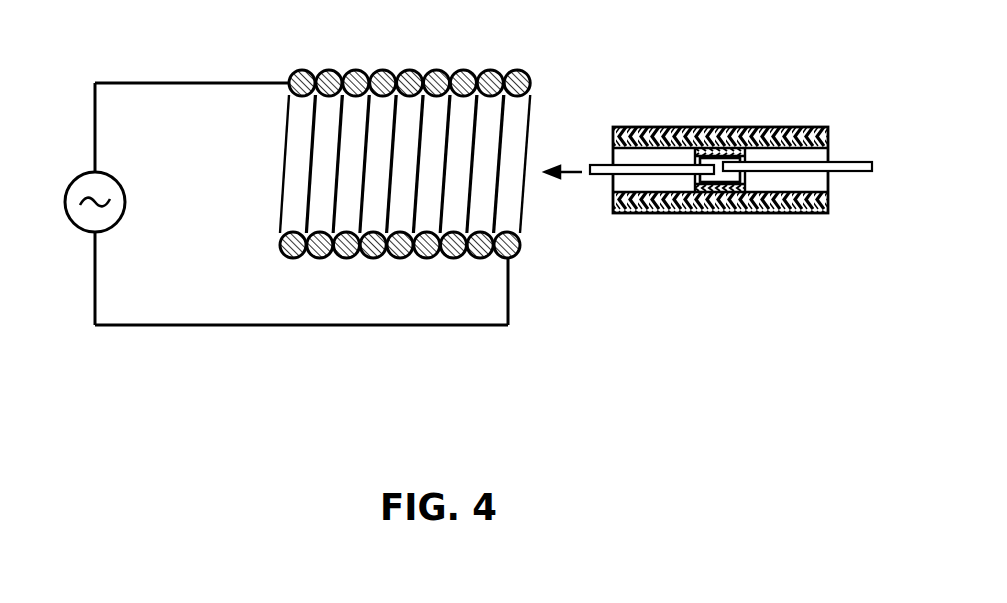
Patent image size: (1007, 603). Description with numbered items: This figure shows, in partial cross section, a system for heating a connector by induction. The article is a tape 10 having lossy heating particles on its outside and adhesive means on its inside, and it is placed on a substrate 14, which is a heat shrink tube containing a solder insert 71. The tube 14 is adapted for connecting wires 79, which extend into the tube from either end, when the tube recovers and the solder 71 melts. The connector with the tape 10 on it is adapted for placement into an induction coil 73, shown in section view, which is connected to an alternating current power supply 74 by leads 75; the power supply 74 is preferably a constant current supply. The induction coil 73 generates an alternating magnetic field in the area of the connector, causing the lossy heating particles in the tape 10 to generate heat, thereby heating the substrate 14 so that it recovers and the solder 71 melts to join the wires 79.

The tape 10 is at (753, 127).
The substrate 14 is at (740, 213).
The solder insert 71 is at (713, 148).
The induction coil 73 is at (383, 70).
The alternating current power supply 74 is at (72, 180).
The leads 75 is at (192, 82).
The wires 79 is at (596, 165).